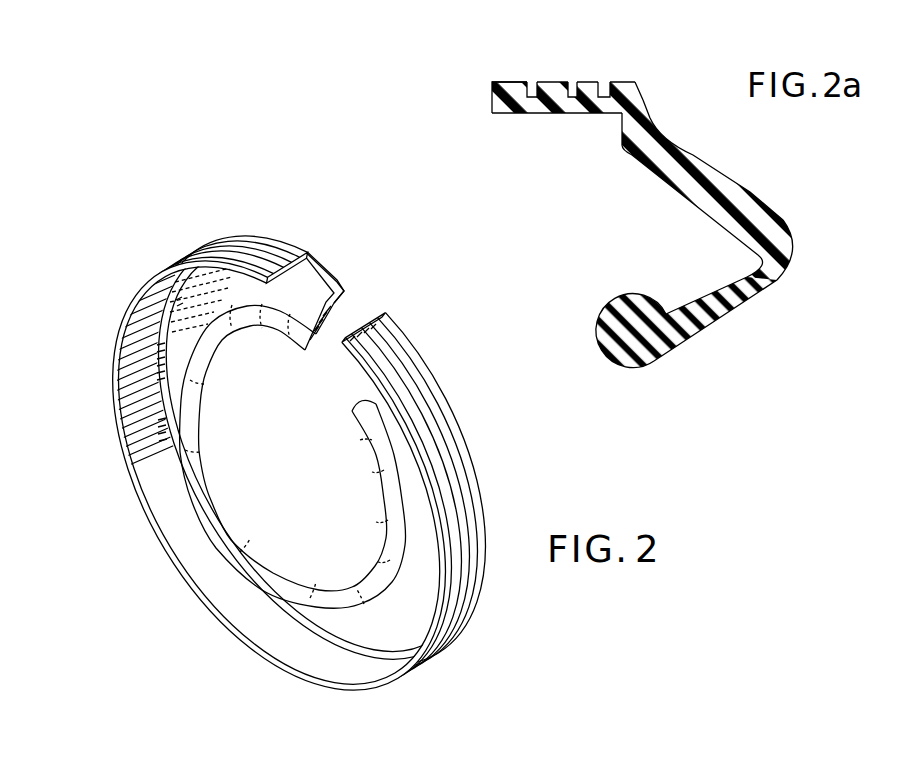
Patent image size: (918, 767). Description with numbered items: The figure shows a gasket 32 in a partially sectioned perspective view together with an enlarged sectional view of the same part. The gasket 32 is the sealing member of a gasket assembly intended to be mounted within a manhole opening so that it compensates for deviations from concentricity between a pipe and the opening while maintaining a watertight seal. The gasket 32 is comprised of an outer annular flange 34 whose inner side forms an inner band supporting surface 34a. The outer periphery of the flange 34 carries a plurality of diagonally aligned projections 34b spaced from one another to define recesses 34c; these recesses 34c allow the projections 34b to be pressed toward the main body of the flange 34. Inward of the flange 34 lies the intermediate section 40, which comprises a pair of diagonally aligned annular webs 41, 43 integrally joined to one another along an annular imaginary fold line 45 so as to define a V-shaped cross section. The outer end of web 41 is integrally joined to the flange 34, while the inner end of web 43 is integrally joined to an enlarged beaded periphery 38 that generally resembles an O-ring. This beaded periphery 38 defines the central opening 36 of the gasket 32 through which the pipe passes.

In FIG. 2, the gasket 32 is at (98, 303).
In FIG. 2, the outer annular flange 34 is at (108, 310).
In FIG. 2A, the outer annular flange 34 is at (492, 113).
In FIG. 2, the inner band supporting surface 34a is at (133, 386).
In FIG. 2A, the inner band supporting surface 34a is at (568, 114).
In FIG. 2, the diagonally aligned projections 34b is at (272, 262).
In FIG. 2A, the diagonally aligned projections 34b is at (497, 82).
In FIG. 2, the recesses 34c is at (236, 256).
In FIG. 2A, the recesses 34c is at (620, 54).
In FIG. 2, the central opening 36 is at (298, 454).
In FIG. 2, the enlarged beaded periphery 38 is at (393, 500).
In FIG. 2A, the enlarged beaded periphery 38 is at (618, 293).
In FIG. 2, the intermediate section 40 is at (346, 268).
In FIG. 2A, the intermediate section 40 is at (782, 204).
In FIG. 2, the web 41 is at (328, 277).
In FIG. 2A, the web 41 is at (693, 165).
In FIG. 2, the web 43 is at (328, 318).
In FIG. 2A, the web 43 is at (712, 326).
In FIG. 2, the annular imaginary fold line 45 is at (344, 287).
In FIG. 2A, the annular imaginary fold line 45 is at (793, 240).